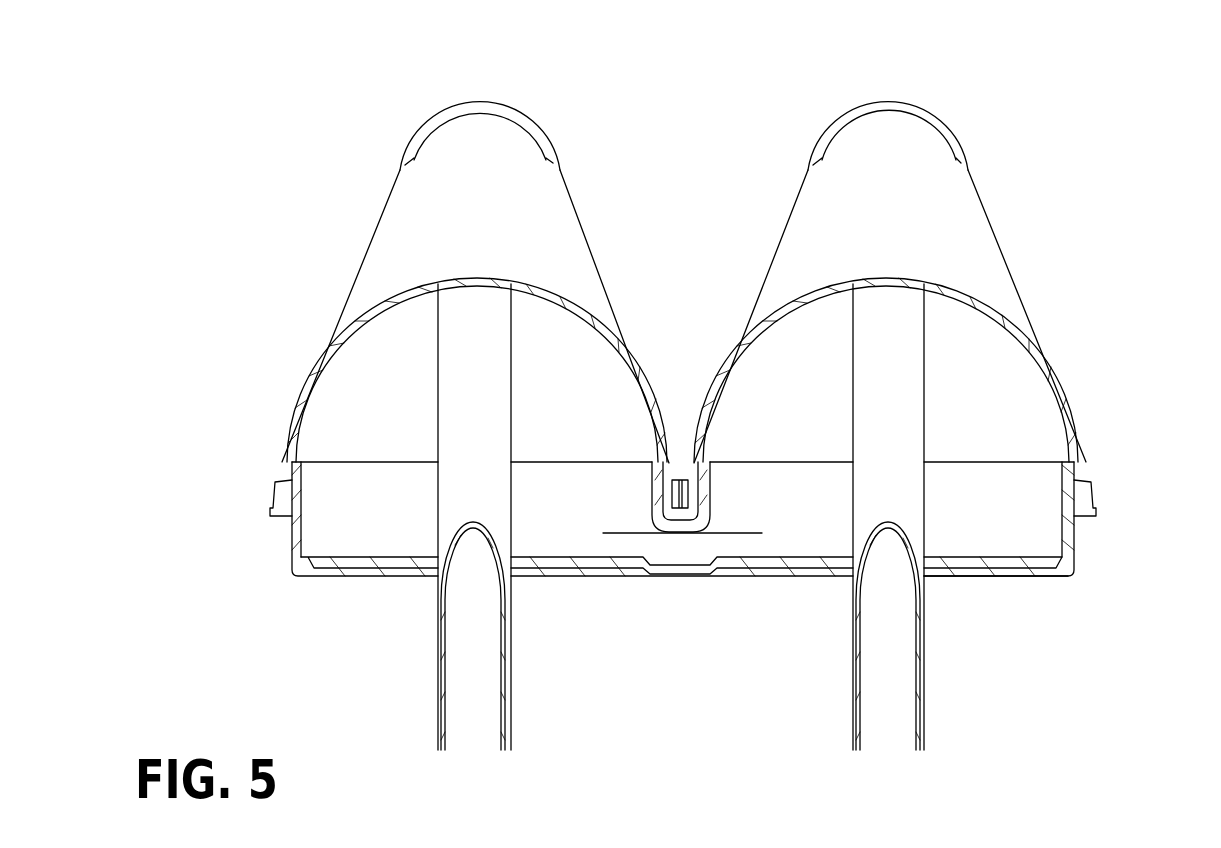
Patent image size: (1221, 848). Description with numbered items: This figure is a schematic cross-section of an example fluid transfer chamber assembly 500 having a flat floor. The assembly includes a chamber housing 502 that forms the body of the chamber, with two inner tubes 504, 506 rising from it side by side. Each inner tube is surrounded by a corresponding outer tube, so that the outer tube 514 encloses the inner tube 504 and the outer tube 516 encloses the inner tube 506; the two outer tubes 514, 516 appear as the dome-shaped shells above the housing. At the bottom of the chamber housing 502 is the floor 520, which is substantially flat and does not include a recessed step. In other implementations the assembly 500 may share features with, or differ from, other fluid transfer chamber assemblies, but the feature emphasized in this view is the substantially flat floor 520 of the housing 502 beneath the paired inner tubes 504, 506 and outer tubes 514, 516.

The fluid transfer chamber assembly 500 is at (235, 72).
The chamber housing 502 is at (291, 562).
The inner tube 504 is at (895, 372).
The inner tube 506 is at (454, 399).
The outer tube 514 is at (972, 263).
The outer tube 516 is at (382, 292).
The floor 520 is at (820, 553).